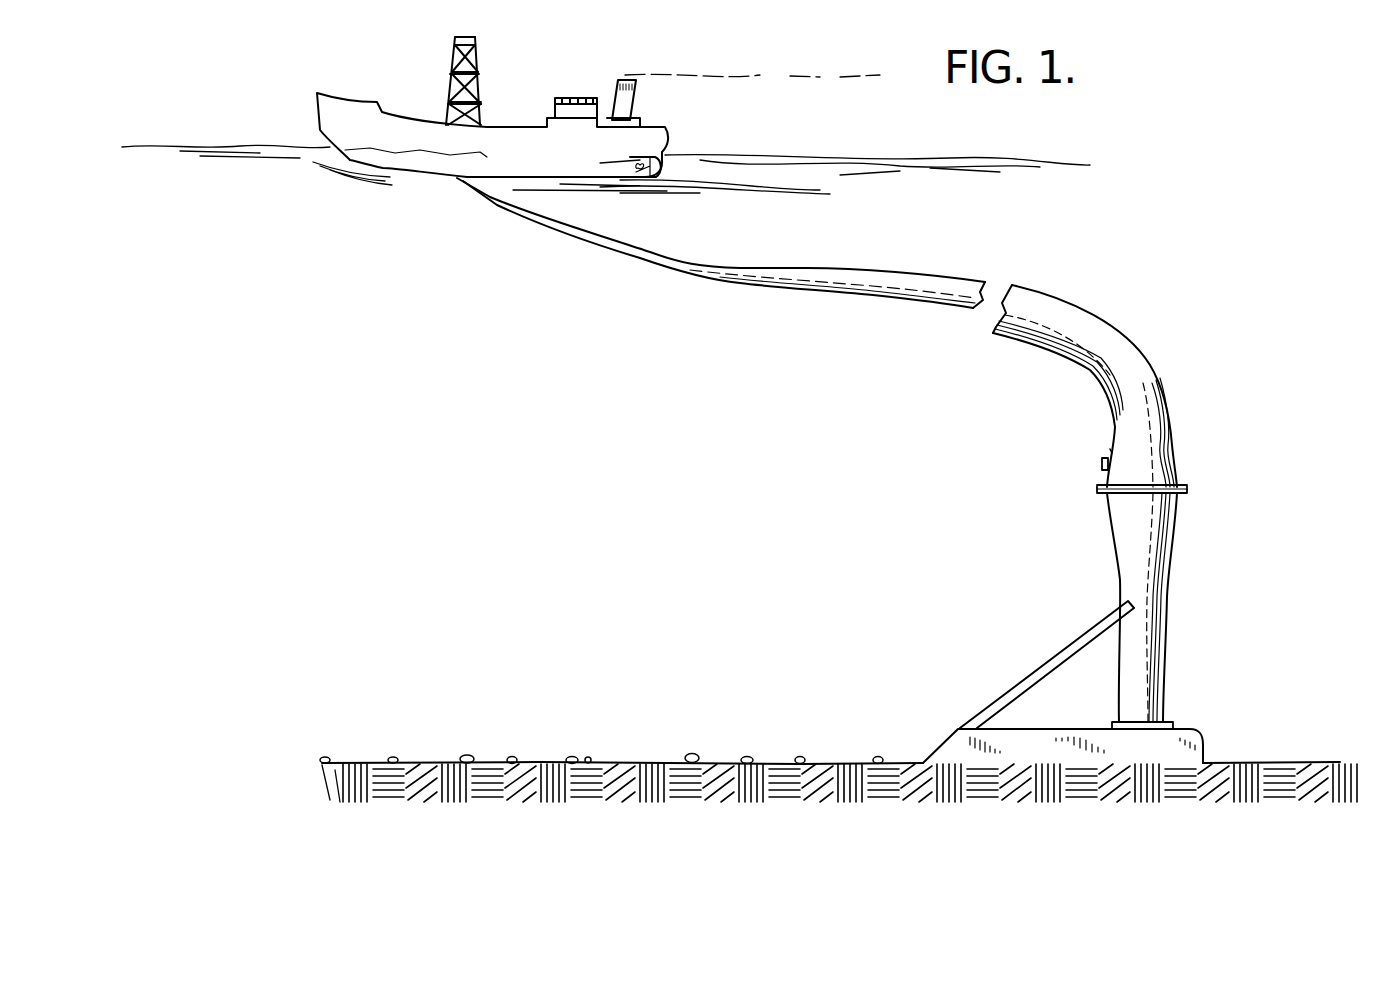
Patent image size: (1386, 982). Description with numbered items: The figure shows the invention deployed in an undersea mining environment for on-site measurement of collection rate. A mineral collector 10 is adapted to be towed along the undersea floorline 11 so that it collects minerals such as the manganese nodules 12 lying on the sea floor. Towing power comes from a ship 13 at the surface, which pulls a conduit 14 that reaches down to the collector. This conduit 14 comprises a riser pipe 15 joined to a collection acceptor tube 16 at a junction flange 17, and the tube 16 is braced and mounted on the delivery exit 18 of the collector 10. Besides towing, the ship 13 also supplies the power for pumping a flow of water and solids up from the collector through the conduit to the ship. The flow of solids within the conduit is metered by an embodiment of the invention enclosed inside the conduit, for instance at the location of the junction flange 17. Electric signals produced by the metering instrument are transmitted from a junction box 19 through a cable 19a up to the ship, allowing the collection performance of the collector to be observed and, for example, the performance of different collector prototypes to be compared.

The mineral collector 10 is at (950, 745).
The undersea floorline 11 is at (603, 760).
The manganese nodules 12 is at (745, 758).
The ship 13 is at (670, 133).
The conduit 14 is at (800, 262).
The riser pipe 15 is at (1172, 405).
The collection acceptor tube 16 is at (1168, 607).
The junction flange 17 is at (1187, 490).
The delivery exit 18 is at (1170, 721).
The junction box 19 is at (1102, 464).
The cable 19a is at (1111, 452).